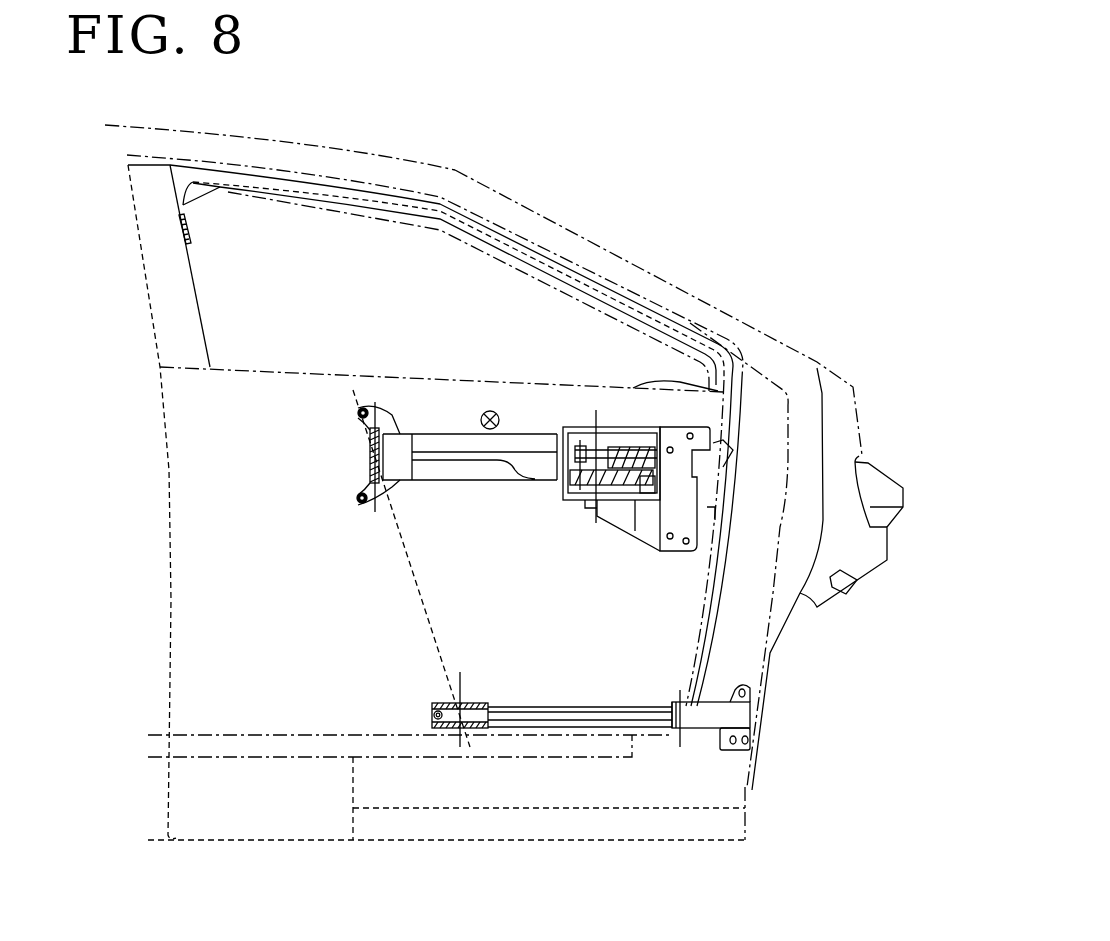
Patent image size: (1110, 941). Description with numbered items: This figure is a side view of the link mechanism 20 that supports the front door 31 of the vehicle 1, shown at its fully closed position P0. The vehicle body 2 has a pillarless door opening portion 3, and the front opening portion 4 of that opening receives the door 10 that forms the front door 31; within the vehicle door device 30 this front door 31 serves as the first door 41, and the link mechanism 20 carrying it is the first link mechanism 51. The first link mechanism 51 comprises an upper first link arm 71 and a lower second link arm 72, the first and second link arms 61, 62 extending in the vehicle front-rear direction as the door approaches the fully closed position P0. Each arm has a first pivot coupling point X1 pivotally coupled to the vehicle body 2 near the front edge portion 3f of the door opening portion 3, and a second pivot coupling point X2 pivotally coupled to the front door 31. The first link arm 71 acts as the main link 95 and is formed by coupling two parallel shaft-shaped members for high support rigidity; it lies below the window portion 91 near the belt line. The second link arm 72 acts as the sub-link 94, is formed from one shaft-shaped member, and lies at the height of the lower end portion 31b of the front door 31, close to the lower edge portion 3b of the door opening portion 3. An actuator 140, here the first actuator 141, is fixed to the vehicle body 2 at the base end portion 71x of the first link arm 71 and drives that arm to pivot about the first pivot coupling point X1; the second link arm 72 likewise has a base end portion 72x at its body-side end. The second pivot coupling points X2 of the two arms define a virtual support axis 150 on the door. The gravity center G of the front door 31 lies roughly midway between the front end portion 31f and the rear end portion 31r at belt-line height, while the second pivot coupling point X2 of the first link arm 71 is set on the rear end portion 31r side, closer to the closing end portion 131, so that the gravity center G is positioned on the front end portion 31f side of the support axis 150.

The vehicle 1 is at (504, 434).
The vehicle door device 30 is at (504, 434).
The vehicle body 2 is at (818, 357).
The front door 31 is at (389, 489).
The first door 41 is at (389, 489).
The door 10 is at (389, 489).
The fully closed position P0 is at (389, 489).
The front end portion 31f is at (663, 573).
The rear end portion 31r is at (98, 502).
The closing end portion 131 is at (187, 603).
The lower end portion 31b is at (388, 713).
The door opening portion 3 is at (446, 785).
The lower edge portion 3b is at (446, 785).
The front opening portion 4 is at (238, 730).
The front edge portion 3f is at (700, 637).
The window portion 91 is at (243, 365).
The virtual support axis 150 is at (418, 598).
The first link mechanism 51 is at (361, 568).
The link mechanism 20 is at (361, 568).
The first link arm 71 is at (468, 487).
The first link arm 61 is at (468, 487).
The main link 95 is at (468, 487).
The base end portion 71x is at (543, 493).
The actuator 140 is at (589, 446).
The first actuator 141 is at (593, 443).
The second link arm 72 is at (591, 722).
The second link arm 62 is at (591, 722).
The sub-link 94 is at (591, 722).
The base end portion 72x is at (653, 717).
The first pivot coupling point X1 is at (565, 413).
The second pivot coupling point X2 is at (380, 407).
The gravity center G is at (480, 413).